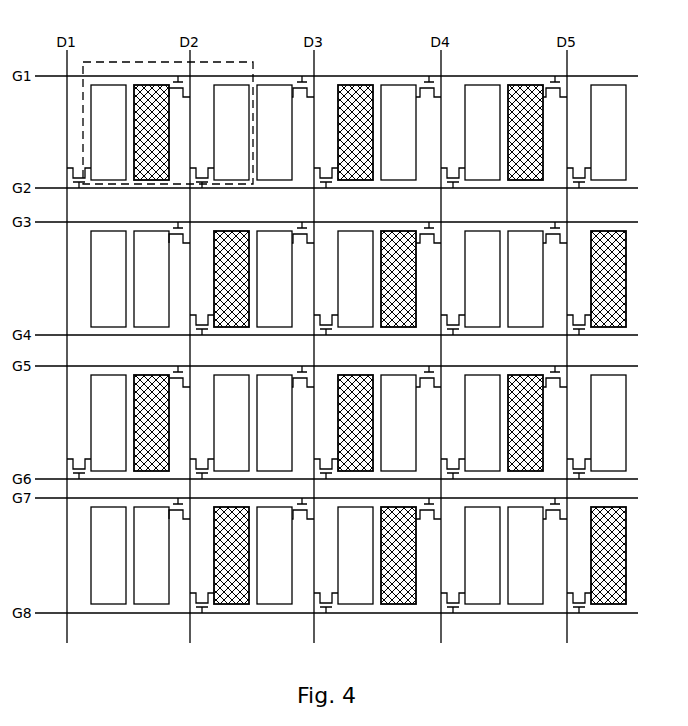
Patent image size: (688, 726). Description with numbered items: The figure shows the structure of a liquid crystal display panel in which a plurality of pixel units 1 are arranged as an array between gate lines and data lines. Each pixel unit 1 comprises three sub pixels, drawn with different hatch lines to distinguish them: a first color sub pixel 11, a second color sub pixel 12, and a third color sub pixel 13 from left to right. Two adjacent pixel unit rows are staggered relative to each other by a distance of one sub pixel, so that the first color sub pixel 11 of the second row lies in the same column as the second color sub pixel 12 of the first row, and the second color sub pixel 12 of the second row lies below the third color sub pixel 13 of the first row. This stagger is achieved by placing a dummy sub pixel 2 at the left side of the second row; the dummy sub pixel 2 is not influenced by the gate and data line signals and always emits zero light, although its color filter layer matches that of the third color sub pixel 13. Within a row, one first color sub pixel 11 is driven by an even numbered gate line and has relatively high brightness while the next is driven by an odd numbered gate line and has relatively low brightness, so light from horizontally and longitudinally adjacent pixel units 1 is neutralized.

The pixel unit 1 is at (97, 55).
The dummy sub pixel 2 is at (107, 288).
The first color sub pixel 11 is at (97, 123).
The second color sub pixel 12 is at (150, 86).
The third color sub pixel 13 is at (231, 95).